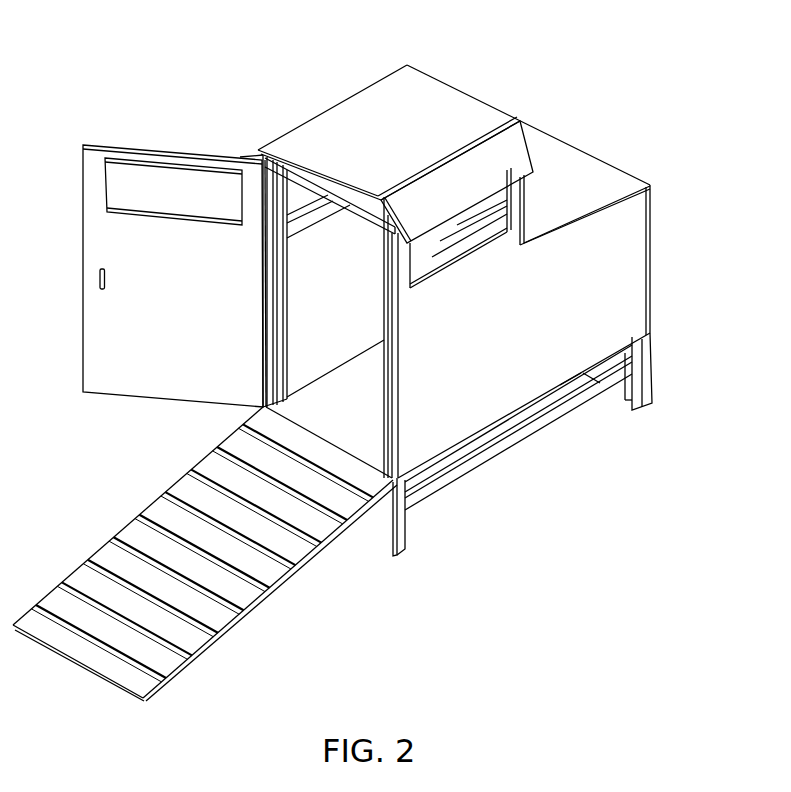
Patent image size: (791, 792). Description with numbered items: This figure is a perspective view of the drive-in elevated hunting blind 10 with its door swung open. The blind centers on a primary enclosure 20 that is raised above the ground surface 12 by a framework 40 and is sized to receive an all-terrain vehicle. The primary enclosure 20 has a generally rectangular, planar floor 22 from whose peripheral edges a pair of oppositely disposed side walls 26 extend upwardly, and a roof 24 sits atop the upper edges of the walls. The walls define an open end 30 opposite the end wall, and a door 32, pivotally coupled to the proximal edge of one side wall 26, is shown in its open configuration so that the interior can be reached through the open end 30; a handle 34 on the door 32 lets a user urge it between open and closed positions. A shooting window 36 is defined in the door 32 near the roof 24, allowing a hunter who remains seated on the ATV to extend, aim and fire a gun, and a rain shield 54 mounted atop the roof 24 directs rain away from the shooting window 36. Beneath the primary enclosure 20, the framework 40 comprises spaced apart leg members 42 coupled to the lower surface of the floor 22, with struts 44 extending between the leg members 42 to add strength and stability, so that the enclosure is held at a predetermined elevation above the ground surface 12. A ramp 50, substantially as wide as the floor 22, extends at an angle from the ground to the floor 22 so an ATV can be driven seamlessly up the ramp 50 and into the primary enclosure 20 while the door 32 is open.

The hunting blind 10 is at (573, 58).
The ground surface 12 is at (585, 576).
The primary enclosure 20 is at (694, 234).
The floor 22 is at (312, 413).
The roof 24 is at (282, 147).
The side wall 26 is at (333, 293).
The open end 30 is at (392, 387).
The door 32 is at (87, 326).
The handle 34 is at (98, 276).
The shooting window 36 is at (166, 168).
The framework 40 is at (520, 470).
The leg member 42 is at (403, 533).
The strut 44 is at (552, 420).
The ramp 50 is at (273, 567).
The rain shield 54 is at (432, 87).